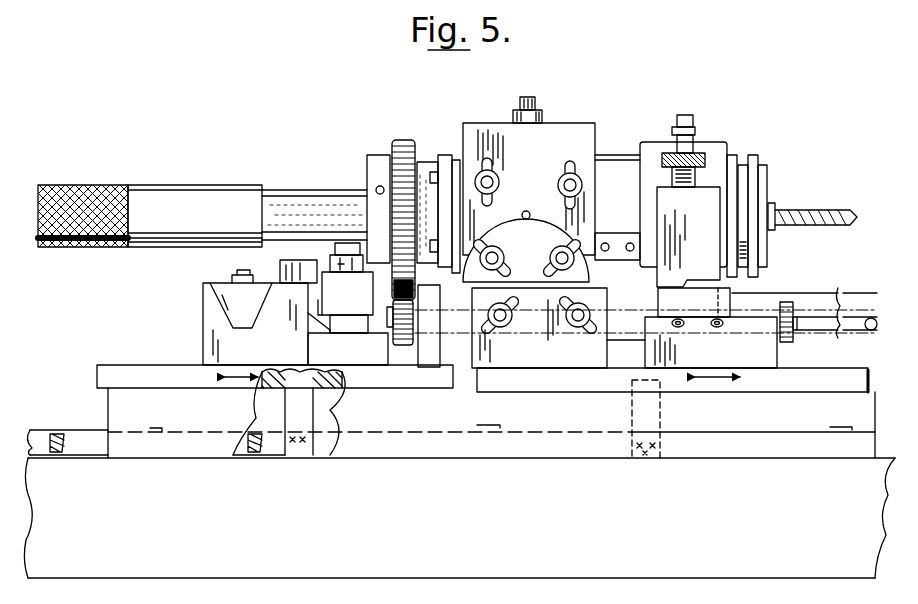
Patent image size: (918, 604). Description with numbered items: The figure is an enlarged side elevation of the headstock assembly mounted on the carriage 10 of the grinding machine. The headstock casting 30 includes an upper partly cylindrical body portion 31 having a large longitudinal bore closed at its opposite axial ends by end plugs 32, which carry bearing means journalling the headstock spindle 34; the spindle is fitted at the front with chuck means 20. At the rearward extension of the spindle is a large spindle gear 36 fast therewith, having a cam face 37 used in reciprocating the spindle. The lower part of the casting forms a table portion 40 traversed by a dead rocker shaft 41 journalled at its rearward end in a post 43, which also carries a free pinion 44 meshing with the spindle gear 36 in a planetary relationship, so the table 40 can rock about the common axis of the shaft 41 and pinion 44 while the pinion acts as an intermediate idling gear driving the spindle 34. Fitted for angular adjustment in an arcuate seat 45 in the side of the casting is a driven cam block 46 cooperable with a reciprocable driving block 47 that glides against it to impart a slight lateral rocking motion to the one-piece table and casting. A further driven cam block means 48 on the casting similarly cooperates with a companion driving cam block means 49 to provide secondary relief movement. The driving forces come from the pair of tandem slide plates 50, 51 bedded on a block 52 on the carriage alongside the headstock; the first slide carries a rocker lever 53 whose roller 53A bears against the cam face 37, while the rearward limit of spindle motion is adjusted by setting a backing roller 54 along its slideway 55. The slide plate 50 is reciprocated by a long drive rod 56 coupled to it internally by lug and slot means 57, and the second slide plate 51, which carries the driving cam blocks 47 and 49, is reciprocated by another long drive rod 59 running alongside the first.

The carriage 10 is at (512, 546).
The chuck means 20 is at (775, 208).
The headstock casting 30 is at (587, 122).
The upper partly cylindrical body portion 31 is at (603, 167).
The end plugs 32 is at (441, 155).
The headstock spindle 34 is at (298, 201).
The spindle gear 36 is at (405, 140).
The cam face 37 is at (366, 190).
The table portion 40 is at (826, 295).
The dead rocker shaft 41 is at (851, 321).
The post 43 is at (432, 368).
The free pinion 44 is at (407, 352).
The arcuate seat 45 is at (578, 236).
The driven cam block 46 is at (540, 268).
The driving block 47 is at (522, 314).
The driven cam block means 48 is at (712, 220).
The driving cam block means 49 is at (704, 311).
The slide plate 50 is at (176, 386).
The slide plate 51 is at (550, 389).
The block 52 is at (500, 418).
The rocker lever 53 is at (362, 305).
The roller 53A is at (334, 258).
The backing roller 54 is at (284, 264).
The slideway 55 is at (292, 297).
The long drive rod 56 is at (50, 433).
The lug and slot means 57 is at (280, 394).
The long drive rod 59 is at (84, 433).